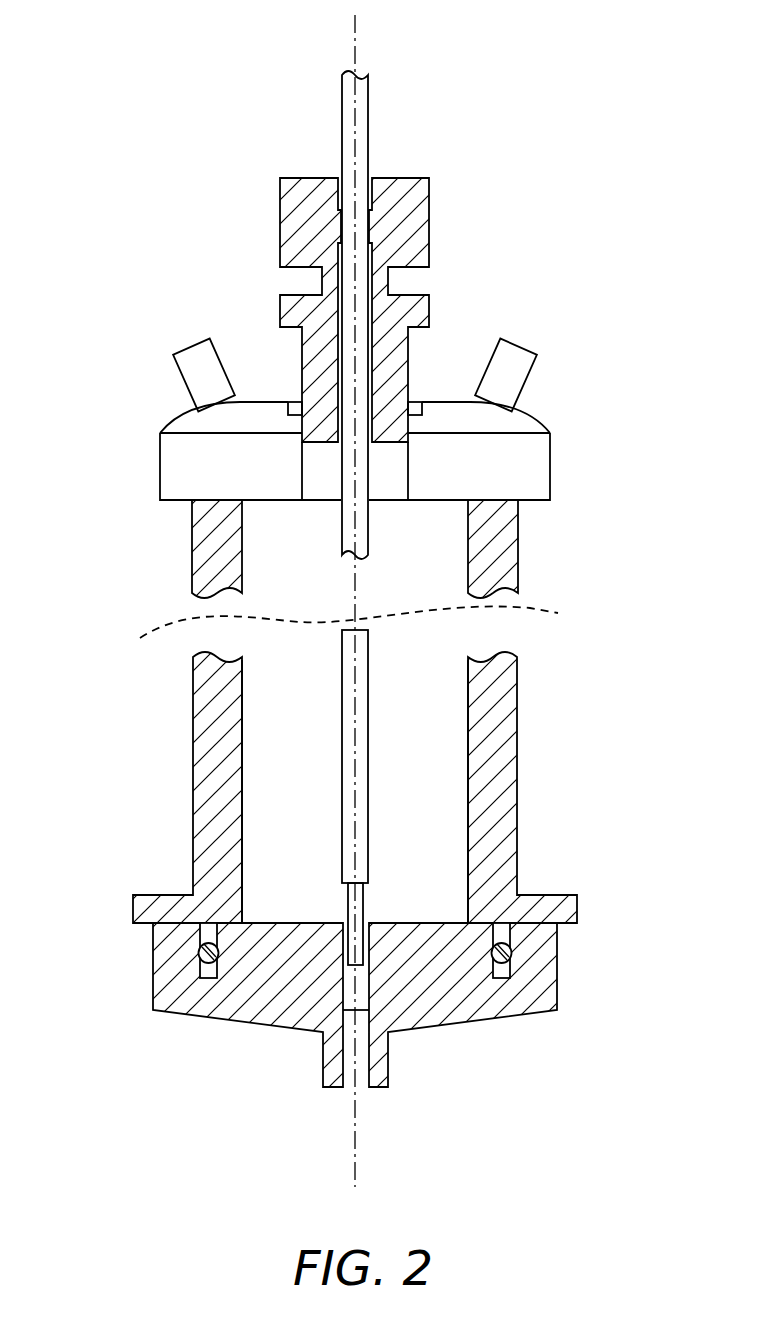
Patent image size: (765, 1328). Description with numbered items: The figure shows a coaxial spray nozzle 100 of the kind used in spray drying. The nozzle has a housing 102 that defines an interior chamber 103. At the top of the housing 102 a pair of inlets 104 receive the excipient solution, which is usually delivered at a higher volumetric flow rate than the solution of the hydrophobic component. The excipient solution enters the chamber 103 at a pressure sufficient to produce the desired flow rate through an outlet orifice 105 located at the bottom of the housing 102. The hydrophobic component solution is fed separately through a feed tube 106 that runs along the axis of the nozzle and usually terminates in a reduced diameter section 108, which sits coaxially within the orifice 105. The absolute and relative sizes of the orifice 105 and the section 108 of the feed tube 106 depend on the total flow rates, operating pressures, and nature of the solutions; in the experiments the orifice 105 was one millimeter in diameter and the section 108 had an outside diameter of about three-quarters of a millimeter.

The coaxial spray nozzle 100 is at (126, 108).
The housing 102 is at (193, 755).
The chamber 103 is at (267, 802).
The inlets 104 is at (178, 380).
The outlet orifice 105 is at (388, 1052).
The feed tube 106 is at (370, 138).
The reduced diameter section 108 is at (370, 910).